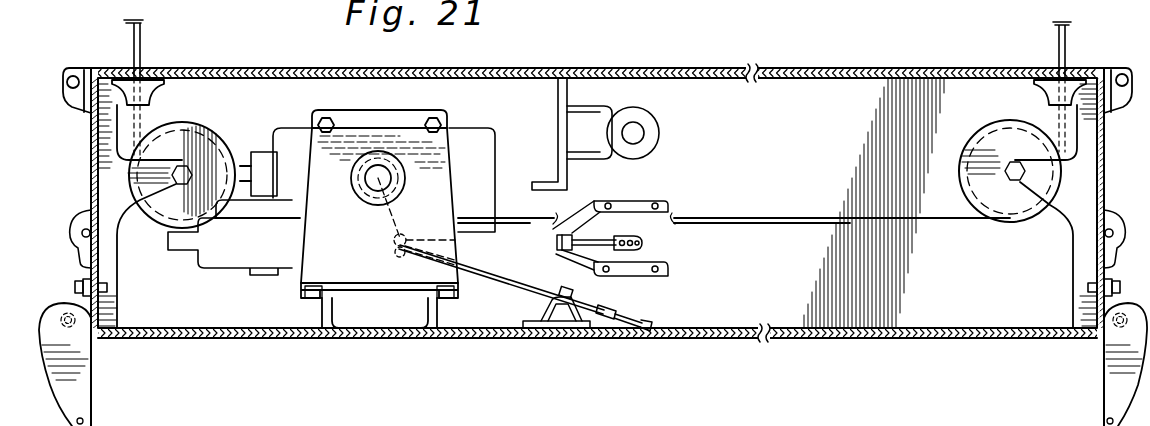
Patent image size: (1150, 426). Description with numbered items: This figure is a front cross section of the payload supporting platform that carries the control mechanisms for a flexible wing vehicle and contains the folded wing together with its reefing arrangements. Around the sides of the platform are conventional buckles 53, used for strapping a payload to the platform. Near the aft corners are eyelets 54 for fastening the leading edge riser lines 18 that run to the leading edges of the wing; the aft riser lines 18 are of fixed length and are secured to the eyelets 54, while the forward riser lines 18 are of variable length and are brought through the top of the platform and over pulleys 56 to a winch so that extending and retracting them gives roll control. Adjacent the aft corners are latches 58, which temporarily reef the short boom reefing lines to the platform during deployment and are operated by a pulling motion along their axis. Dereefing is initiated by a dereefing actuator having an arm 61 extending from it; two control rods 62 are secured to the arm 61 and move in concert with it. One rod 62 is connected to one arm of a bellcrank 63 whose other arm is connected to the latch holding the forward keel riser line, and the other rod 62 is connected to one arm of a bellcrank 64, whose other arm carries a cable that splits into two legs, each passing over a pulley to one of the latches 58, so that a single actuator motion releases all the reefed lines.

The leading edge riser lines 18 is at (144, 48).
The buckles 53 is at (93, 402).
The eyelets 54 is at (72, 100).
The pulleys 56 is at (213, 156).
The latches 58 is at (68, 222).
The arm 61 is at (396, 214).
The control rods 62 is at (523, 281).
The bellcrank 63 is at (638, 235).
The bellcrank 64 is at (617, 311).